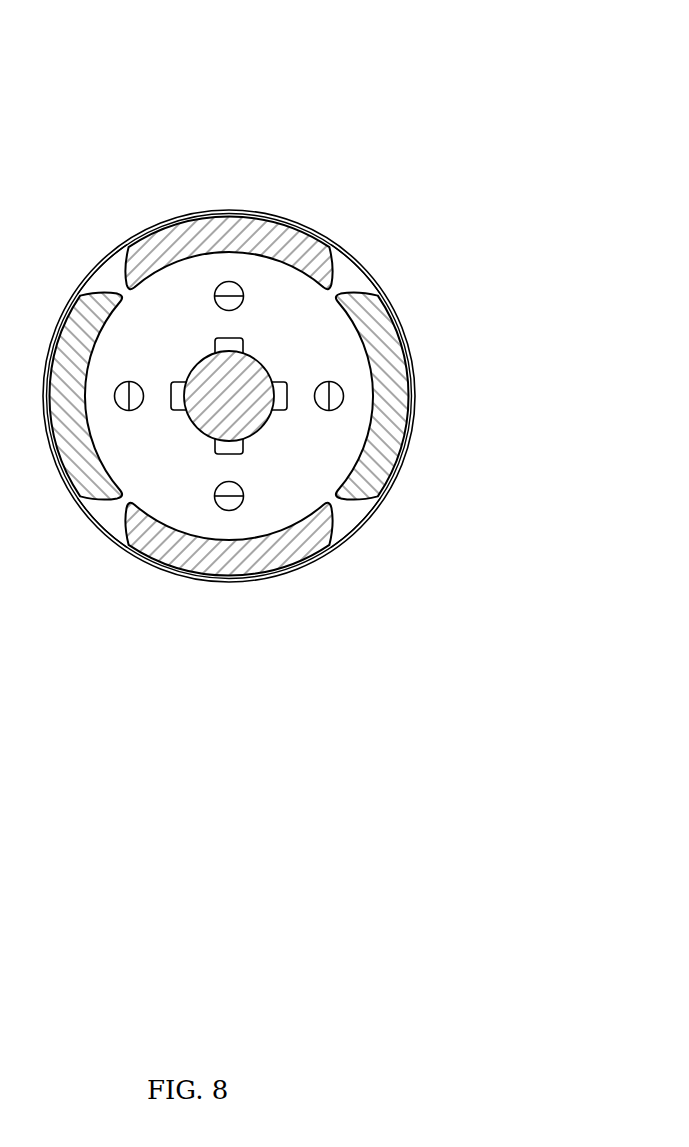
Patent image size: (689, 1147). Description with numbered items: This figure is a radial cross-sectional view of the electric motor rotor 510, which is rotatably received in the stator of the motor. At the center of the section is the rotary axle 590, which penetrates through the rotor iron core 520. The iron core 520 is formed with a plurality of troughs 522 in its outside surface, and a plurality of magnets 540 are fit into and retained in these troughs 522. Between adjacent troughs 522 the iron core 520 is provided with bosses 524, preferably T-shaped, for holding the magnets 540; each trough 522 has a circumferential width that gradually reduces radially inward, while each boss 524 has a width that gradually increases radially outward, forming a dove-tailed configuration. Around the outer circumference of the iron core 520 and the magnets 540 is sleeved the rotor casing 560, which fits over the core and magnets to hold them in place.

The rotor 510 is at (258, 45).
The rotor iron core 520 is at (284, 483).
The troughs 522 is at (377, 487).
The bosses 524 is at (362, 507).
The magnets 540 is at (270, 237).
The rotor casing 560 is at (415, 387).
The rotary axle 590 is at (232, 383).